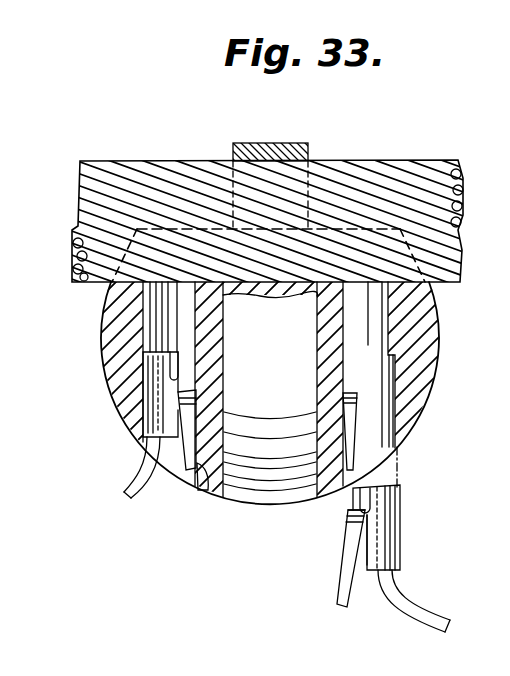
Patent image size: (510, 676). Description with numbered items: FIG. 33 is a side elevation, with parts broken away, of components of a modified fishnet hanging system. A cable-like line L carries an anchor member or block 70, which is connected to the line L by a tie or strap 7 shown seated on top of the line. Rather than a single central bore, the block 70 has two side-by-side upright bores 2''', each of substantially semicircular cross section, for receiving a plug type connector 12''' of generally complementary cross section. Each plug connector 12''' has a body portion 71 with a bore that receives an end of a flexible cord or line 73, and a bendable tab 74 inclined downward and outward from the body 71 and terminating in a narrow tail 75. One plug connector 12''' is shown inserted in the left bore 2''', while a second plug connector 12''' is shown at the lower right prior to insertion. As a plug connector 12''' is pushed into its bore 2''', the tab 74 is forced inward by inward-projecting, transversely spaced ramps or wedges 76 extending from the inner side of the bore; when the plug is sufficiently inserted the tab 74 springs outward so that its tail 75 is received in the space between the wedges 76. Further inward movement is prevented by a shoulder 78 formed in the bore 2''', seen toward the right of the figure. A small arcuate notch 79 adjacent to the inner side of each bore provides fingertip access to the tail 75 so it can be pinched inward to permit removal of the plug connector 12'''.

The line L is at (406, 160).
The tie or strap 7 is at (284, 143).
The anchor member or block 70 is at (113, 299).
The ramps or wedges 76 is at (315, 395).
The upright bores 2''' is at (266, 364).
The shoulder 78 is at (398, 370).
The plug type connector 12''' is at (250, 461).
The body portion 71 is at (383, 531).
The flexible cord or line 73 is at (125, 474).
The tail 75 is at (170, 490).
The arcuate notch 79 is at (202, 490).
The bendable tab 74 is at (352, 517).